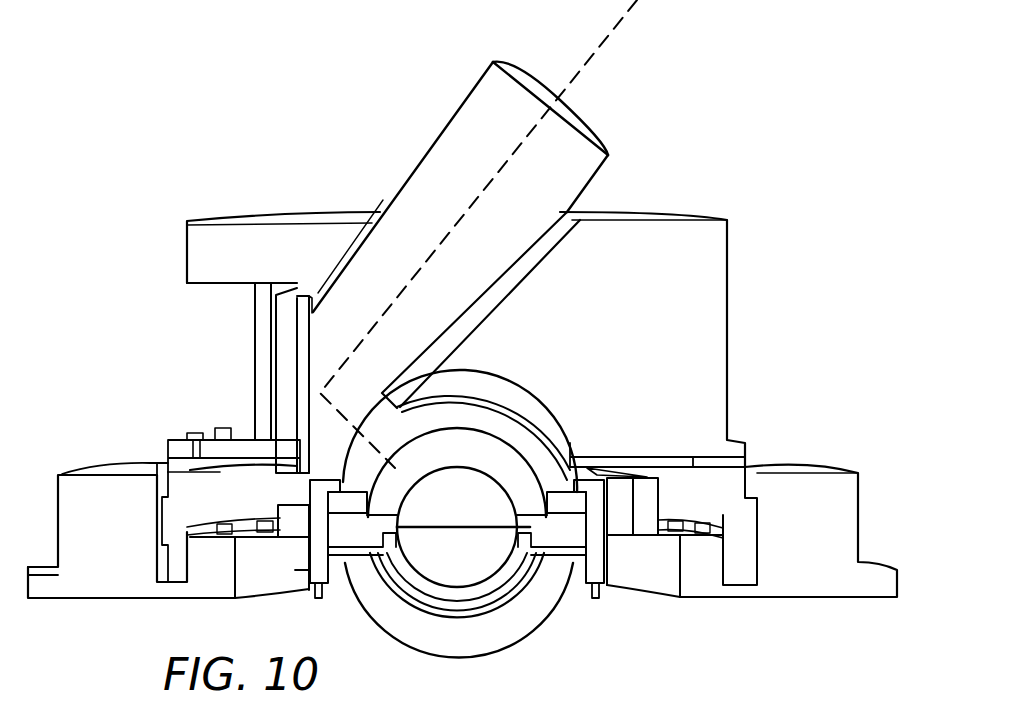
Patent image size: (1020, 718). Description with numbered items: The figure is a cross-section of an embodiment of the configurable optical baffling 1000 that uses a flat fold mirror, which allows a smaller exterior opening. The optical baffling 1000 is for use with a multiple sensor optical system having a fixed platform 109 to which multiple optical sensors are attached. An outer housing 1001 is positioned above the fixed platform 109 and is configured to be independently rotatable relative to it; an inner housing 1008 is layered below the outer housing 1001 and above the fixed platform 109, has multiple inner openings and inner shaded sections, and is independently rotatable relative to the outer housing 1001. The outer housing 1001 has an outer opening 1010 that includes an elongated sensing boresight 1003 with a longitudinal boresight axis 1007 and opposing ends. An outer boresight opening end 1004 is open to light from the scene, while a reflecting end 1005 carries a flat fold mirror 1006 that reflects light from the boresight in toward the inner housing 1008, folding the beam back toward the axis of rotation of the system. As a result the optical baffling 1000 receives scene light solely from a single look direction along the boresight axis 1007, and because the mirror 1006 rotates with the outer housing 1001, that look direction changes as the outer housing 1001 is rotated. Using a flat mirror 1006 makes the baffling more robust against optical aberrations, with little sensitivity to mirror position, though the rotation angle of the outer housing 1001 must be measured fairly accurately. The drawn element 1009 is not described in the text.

The configurable optical baffling 1000 is at (767, 149).
The outer housing 1001 is at (727, 348).
The elongated sensing boresight 1003 is at (447, 123).
The outer boresight opening end 1004 is at (580, 117).
The reflecting end 1005 is at (323, 332).
The flat fold mirror 1006 is at (303, 370).
The longitudinal boresight axis 1007 is at (607, 37).
The inner housing 1008 is at (530, 610).
The bracket 1009 is at (340, 425).
The outer opening 1010 is at (560, 212).
The fixed platform 109 is at (817, 573).